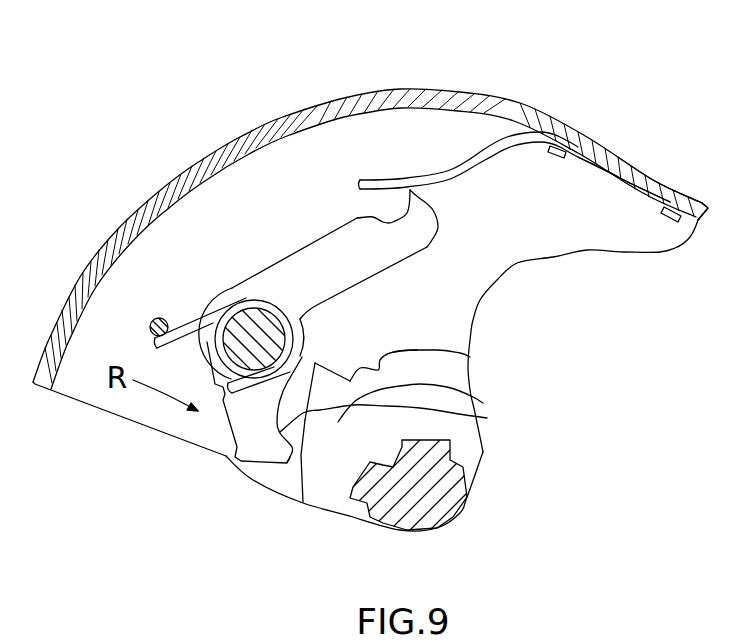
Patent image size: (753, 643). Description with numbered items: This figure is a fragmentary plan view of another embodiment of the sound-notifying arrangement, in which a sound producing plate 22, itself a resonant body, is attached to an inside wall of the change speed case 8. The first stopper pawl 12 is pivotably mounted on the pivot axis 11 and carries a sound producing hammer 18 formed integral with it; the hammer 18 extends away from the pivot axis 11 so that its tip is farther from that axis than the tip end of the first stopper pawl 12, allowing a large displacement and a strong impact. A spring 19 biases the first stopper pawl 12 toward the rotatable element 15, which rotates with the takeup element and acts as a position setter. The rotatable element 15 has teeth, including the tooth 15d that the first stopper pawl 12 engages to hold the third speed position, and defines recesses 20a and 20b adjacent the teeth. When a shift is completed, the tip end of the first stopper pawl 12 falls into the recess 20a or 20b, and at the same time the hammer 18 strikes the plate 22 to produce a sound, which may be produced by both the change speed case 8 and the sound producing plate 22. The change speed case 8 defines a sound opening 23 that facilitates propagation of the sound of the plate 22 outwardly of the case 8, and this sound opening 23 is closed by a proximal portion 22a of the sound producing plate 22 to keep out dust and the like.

The change speed case 8 is at (242, 135).
The pivot axis 11 is at (247, 315).
The first stopper pawl 12 is at (240, 457).
The rotatable element 15 is at (445, 347).
The tooth 15d is at (315, 363).
The sound producing hammer 18 is at (330, 247).
The spring 19 is at (189, 322).
The recess 20a is at (472, 413).
The recess 20b is at (350, 381).
The sound producing plate 22 is at (452, 163).
The proximal portion 22a is at (617, 175).
The sound opening 23 is at (646, 156).